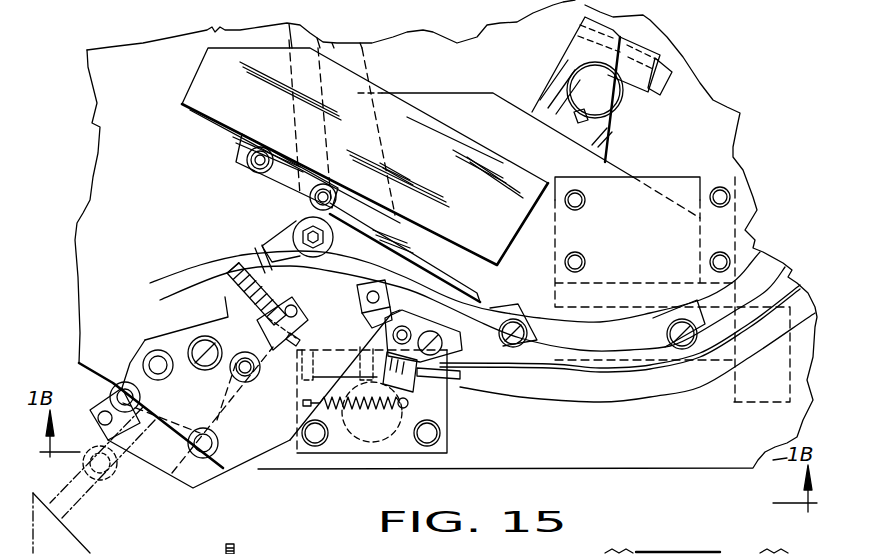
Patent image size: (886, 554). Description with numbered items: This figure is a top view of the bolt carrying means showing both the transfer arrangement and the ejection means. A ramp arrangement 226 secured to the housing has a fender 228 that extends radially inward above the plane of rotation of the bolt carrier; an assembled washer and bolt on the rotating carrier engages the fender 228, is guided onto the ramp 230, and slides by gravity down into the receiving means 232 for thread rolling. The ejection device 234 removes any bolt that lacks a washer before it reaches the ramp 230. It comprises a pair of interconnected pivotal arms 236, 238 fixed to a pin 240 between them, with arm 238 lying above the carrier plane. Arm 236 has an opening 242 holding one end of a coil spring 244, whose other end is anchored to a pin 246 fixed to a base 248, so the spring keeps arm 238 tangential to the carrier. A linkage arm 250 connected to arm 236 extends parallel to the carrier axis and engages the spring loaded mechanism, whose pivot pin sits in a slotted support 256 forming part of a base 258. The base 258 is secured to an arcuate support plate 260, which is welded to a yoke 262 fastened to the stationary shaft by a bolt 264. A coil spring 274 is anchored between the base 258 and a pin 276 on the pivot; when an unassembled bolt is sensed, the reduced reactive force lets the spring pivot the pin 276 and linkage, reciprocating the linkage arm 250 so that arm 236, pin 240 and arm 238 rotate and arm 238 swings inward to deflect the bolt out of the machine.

The ramp arrangement 226 is at (198, 321).
The fender 228 is at (421, 257).
The ramp 230 is at (263, 243).
The receiving means 232 is at (77, 553).
The ejection device 234 is at (347, 439).
The pivotal arm 236 is at (410, 390).
The pivotal arm 238 is at (520, 360).
The pin 240 is at (396, 330).
The opening 242 is at (432, 430).
The coil spring 244 is at (337, 403).
The pin 246 is at (319, 392).
The base 248 is at (403, 443).
The linkage arm 250 is at (443, 380).
The slotted support 256 is at (727, 553).
The base 258 is at (672, 289).
The support plate 260 is at (438, 107).
The yoke 262 is at (570, 58).
The bolt 264 is at (667, 70).
The coil spring 274 is at (623, 553).
The pin 276 is at (783, 553).